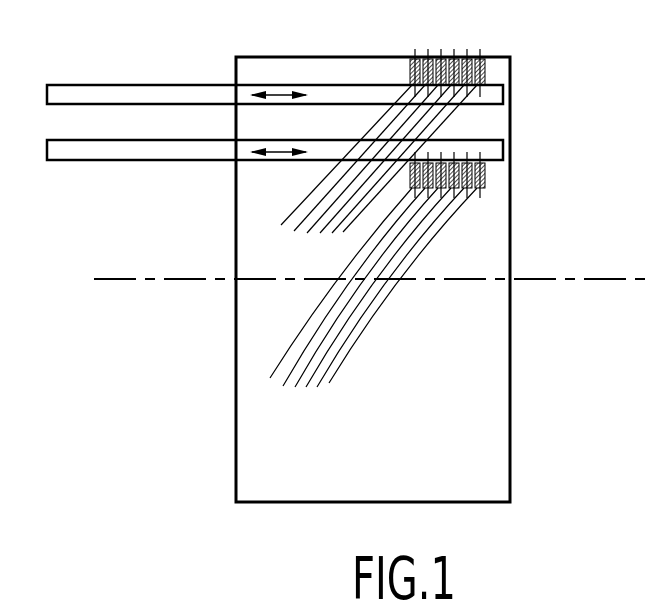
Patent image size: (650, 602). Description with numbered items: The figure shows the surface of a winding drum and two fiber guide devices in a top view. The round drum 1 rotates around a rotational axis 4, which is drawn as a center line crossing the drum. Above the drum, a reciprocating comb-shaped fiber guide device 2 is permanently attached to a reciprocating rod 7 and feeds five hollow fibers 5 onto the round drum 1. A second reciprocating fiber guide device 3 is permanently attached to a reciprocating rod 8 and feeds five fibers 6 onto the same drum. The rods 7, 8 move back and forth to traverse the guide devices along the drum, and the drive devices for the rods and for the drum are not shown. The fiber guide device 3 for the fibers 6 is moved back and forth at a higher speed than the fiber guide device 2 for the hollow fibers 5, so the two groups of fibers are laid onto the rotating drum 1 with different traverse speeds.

The round drum 1 is at (498, 400).
The reciprocating comb-shaped fiber guide device 2 is at (458, 62).
The reciprocating fiber guide device 3 is at (488, 183).
The rotational axis 4 is at (118, 280).
The hollow fibers 5 is at (303, 222).
The fibers 6 is at (345, 337).
The reciprocating rod 7 is at (130, 93).
The reciprocating rod 8 is at (137, 153).